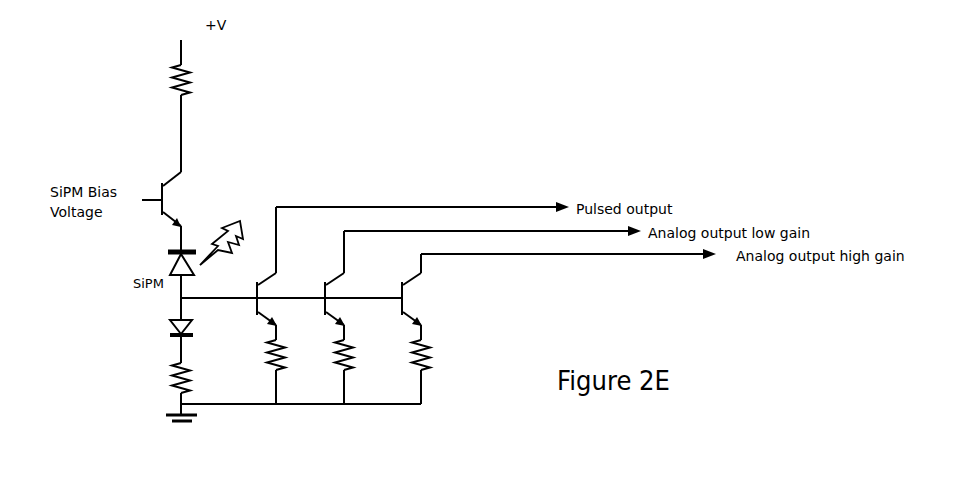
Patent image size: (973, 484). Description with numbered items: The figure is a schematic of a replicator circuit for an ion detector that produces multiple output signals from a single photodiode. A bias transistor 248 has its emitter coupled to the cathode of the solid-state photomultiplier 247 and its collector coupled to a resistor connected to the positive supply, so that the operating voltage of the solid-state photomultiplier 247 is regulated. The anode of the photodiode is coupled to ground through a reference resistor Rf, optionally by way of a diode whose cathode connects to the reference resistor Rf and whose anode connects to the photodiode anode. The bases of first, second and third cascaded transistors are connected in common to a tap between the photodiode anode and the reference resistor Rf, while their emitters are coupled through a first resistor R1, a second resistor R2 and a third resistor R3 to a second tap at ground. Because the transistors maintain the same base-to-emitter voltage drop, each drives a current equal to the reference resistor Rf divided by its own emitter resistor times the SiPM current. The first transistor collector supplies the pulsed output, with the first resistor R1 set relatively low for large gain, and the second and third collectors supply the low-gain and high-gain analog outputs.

The transistor 248 is at (170, 171).
The solid-state photomultiplier 247 is at (172, 264).
The first resistor R1 is at (287, 355).
The second resistor R2 is at (355, 355).
The third resistor R3 is at (432, 355).
The reference resistor Rf is at (193, 378).